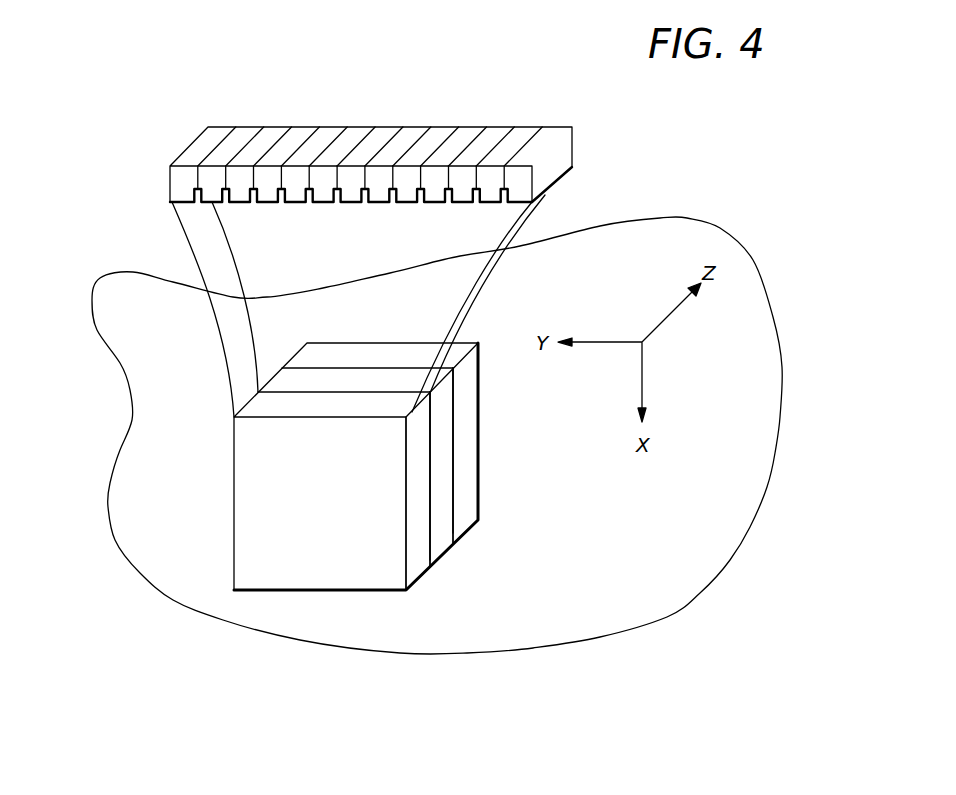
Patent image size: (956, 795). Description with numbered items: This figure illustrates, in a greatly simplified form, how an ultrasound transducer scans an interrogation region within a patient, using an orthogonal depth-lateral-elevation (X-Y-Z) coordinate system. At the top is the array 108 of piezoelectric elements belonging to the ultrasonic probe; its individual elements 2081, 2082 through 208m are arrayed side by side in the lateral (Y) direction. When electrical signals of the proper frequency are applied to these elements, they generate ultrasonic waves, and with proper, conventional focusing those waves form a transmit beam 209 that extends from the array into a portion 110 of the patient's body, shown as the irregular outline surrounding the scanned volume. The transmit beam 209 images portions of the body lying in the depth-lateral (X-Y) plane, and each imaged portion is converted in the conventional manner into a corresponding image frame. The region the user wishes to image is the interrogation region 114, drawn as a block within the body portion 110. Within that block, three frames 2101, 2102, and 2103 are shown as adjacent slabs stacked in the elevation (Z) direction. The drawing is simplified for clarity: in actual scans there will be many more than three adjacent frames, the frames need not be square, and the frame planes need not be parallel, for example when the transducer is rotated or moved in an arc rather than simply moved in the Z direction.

The portion of the patient's body 110 is at (145, 580).
The array of piezoelectric elements 108 is at (419, 129).
The piezoelectric element 2081 is at (218, 126).
The piezoelectric element 2082 is at (255, 126).
The piezoelectric element 208m is at (633, 122).
The transmit beam 209 is at (224, 336).
The interrogation region 114 is at (233, 508).
The image frame 2101 is at (424, 576).
The image frame 2102 is at (455, 549).
The image frame 2103 is at (476, 529).